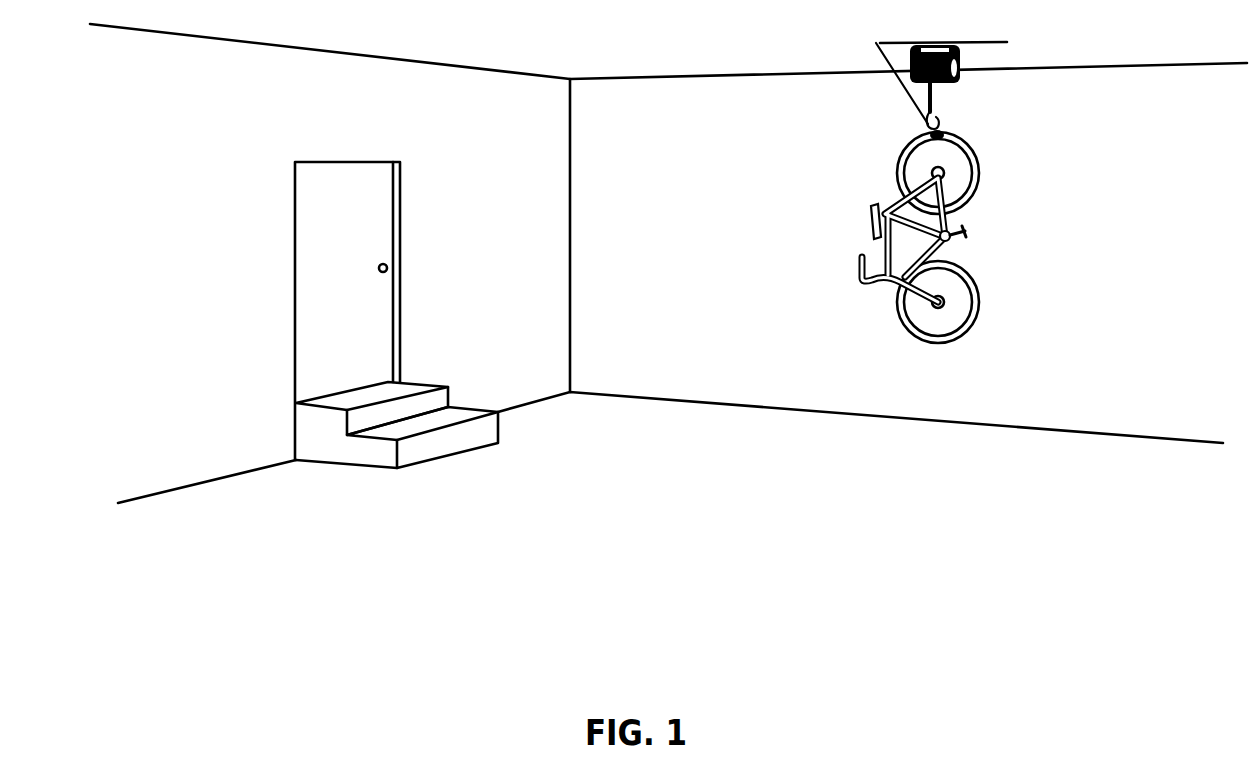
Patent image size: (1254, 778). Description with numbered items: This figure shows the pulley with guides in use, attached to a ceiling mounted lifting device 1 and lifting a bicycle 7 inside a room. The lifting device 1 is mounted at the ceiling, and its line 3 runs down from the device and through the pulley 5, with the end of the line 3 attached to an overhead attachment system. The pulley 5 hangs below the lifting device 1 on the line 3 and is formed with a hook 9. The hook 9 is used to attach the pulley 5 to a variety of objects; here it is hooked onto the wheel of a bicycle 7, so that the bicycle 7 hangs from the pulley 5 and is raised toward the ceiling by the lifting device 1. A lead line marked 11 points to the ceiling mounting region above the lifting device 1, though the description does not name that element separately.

The lifting device 1 is at (948, 78).
The line 3 is at (913, 80).
The pulley 5 is at (937, 136).
The bicycle 7 is at (872, 238).
The hook 9 is at (972, 154).
The ceiling mount 11 is at (893, 43).